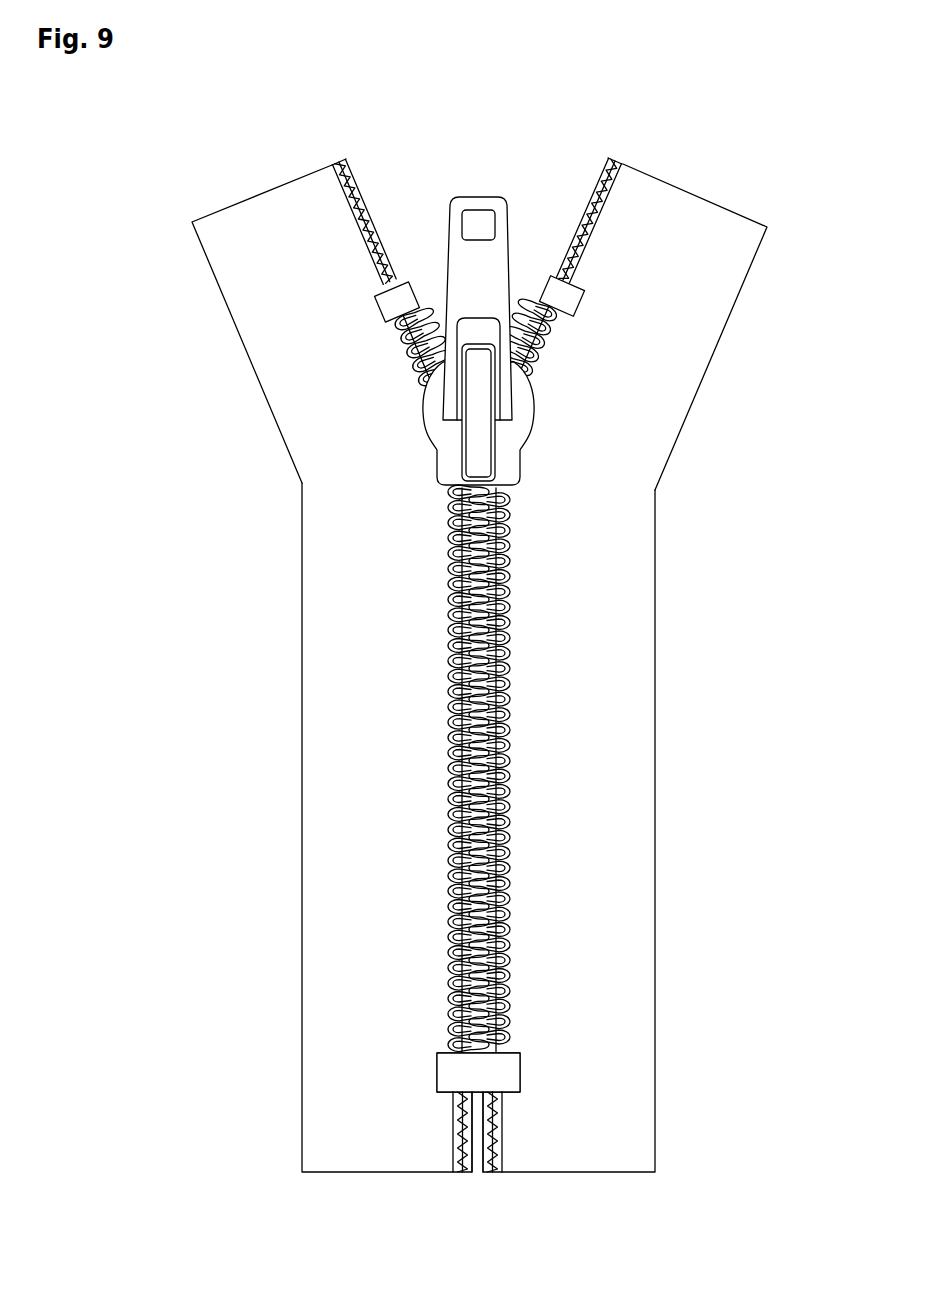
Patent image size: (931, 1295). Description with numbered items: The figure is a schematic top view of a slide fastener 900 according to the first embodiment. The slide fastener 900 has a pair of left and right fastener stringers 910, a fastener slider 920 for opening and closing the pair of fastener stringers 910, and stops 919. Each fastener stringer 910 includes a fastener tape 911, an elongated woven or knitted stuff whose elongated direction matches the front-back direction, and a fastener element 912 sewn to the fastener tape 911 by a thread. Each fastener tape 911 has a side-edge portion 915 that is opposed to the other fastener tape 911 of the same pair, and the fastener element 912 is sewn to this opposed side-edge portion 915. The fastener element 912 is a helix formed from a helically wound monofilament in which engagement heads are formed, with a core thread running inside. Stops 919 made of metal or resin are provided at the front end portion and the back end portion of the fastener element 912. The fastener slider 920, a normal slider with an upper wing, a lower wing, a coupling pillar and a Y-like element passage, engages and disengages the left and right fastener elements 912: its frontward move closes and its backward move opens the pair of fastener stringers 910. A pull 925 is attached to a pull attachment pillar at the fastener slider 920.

The slide fastener 900 is at (115, 150).
The fastener stringer 910 is at (391, 1146).
The fastener tape 911 is at (310, 285).
The fastener element 912 is at (432, 348).
The side-edge portion 915 is at (497, 1173).
The stop 919 is at (414, 293).
The fastener slider 920 is at (507, 458).
The pull 925 is at (500, 271).